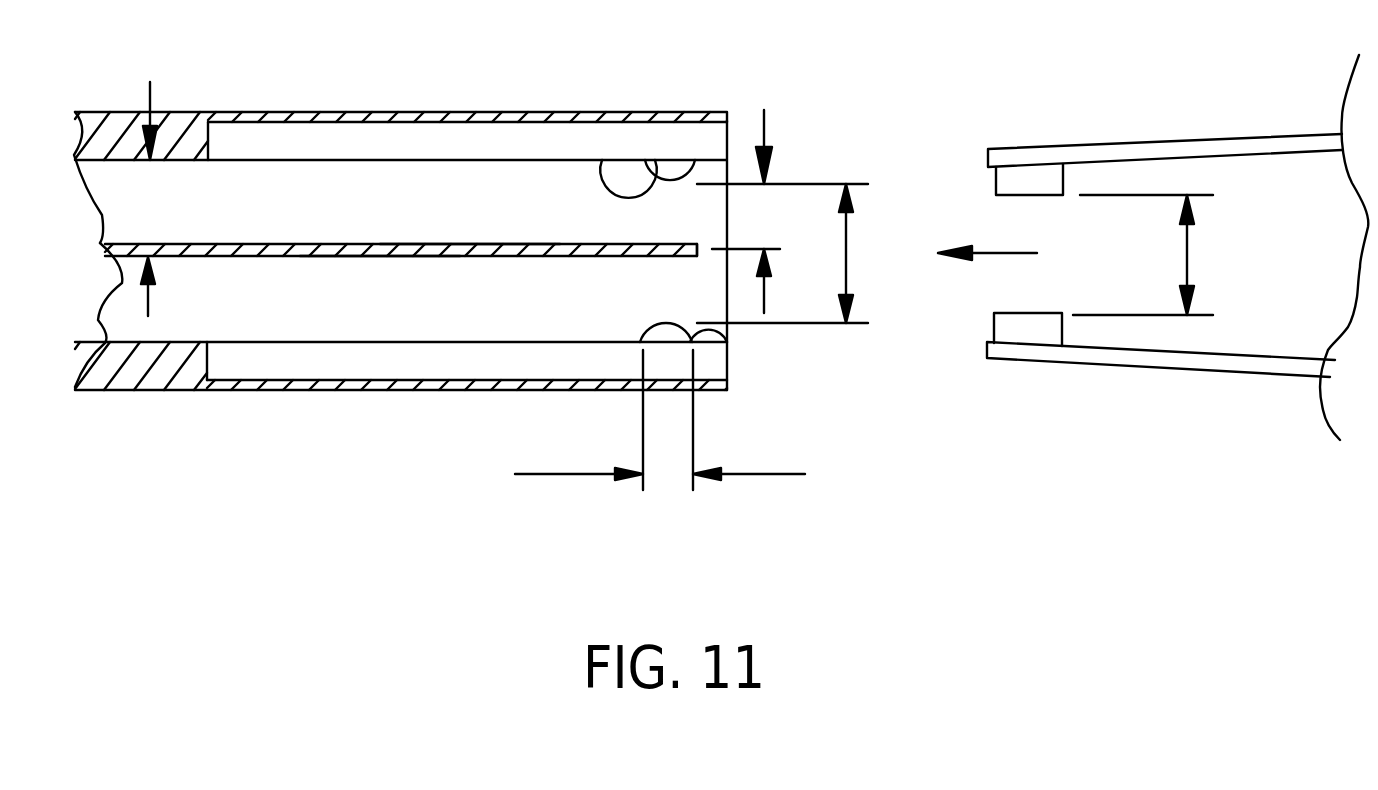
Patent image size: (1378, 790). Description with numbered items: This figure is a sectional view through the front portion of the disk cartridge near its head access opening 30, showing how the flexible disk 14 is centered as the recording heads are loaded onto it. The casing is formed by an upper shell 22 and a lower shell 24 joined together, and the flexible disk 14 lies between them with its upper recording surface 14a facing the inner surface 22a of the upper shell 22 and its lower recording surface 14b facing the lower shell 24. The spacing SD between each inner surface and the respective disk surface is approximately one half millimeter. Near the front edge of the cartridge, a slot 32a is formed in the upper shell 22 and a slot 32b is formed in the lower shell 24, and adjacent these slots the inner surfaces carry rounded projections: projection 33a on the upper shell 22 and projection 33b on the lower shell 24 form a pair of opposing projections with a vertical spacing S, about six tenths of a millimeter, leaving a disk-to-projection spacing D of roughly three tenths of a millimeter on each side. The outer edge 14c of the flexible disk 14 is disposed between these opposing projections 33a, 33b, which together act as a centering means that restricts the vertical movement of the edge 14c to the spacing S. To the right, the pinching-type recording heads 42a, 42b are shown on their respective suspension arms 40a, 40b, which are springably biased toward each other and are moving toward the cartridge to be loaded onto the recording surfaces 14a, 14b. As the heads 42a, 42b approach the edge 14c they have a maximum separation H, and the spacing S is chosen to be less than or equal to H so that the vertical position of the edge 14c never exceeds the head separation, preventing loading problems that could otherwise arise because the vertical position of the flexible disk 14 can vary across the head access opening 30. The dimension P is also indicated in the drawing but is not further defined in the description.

The flexible disk 14 is at (463, 257).
The recording surface 14a is at (477, 244).
The recording surface 14b is at (375, 257).
The outer edge of the flexible disk 14c is at (658, 257).
The upper shell 22 is at (105, 112).
The inner surface of the upper shell 22a is at (180, 118).
The lower shell 24 is at (165, 388).
The head access opening 30 is at (688, 288).
The slot 32a is at (350, 143).
The slot 32b is at (273, 353).
The projection 33a is at (605, 182).
The projection 33b is at (700, 329).
The suspension arm 40a is at (1190, 152).
The suspension arm 40b is at (1203, 362).
The recording head 42a is at (1033, 180).
The recording head 42b is at (1036, 335).
The dimension P is at (764, 128).
The spacing between opposing projections S is at (846, 250).
The disk-to-projection spacing D is at (768, 474).
The maximum separation of the recording heads H is at (1187, 243).
The spacing between inner surface and disk surface SD is at (150, 95).